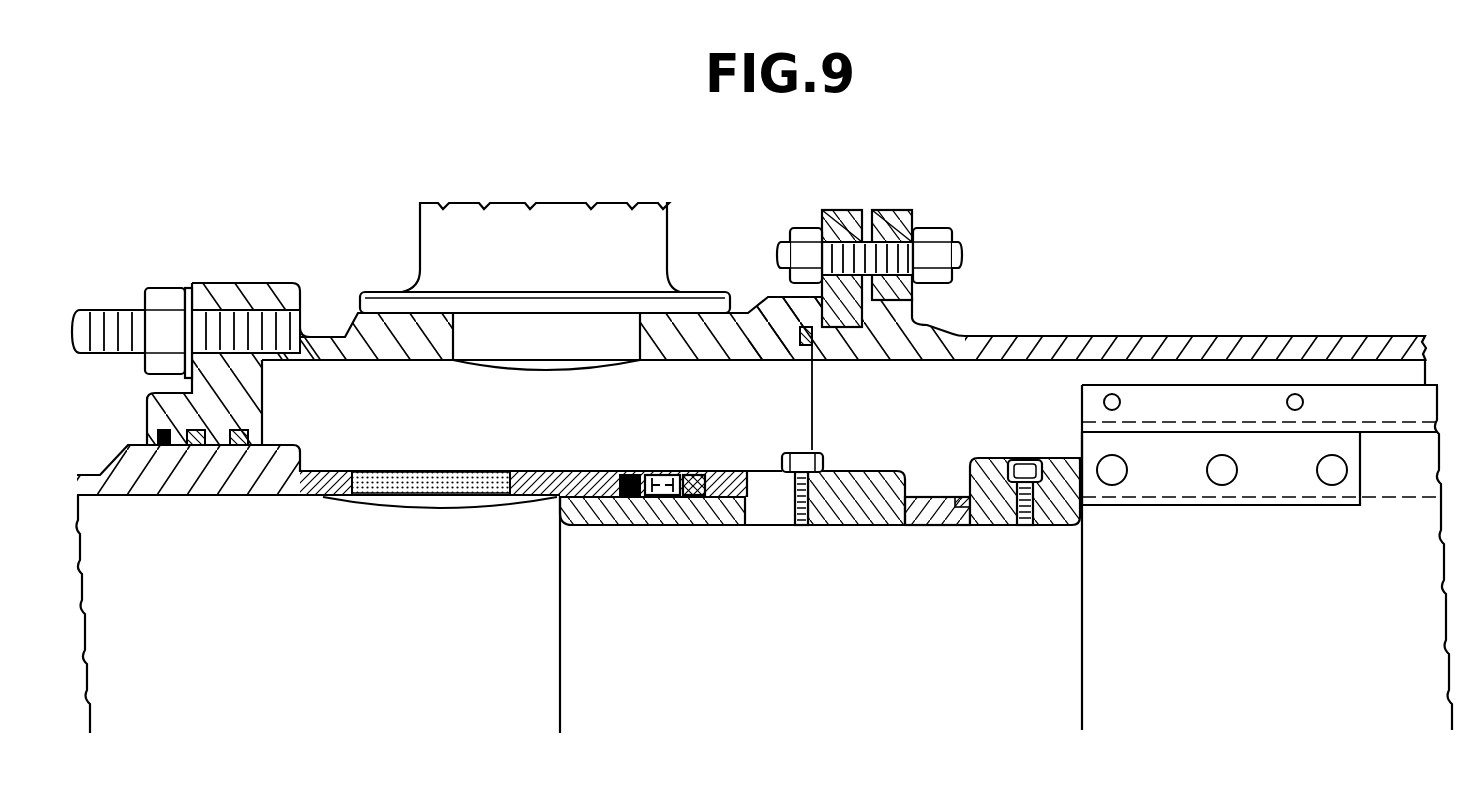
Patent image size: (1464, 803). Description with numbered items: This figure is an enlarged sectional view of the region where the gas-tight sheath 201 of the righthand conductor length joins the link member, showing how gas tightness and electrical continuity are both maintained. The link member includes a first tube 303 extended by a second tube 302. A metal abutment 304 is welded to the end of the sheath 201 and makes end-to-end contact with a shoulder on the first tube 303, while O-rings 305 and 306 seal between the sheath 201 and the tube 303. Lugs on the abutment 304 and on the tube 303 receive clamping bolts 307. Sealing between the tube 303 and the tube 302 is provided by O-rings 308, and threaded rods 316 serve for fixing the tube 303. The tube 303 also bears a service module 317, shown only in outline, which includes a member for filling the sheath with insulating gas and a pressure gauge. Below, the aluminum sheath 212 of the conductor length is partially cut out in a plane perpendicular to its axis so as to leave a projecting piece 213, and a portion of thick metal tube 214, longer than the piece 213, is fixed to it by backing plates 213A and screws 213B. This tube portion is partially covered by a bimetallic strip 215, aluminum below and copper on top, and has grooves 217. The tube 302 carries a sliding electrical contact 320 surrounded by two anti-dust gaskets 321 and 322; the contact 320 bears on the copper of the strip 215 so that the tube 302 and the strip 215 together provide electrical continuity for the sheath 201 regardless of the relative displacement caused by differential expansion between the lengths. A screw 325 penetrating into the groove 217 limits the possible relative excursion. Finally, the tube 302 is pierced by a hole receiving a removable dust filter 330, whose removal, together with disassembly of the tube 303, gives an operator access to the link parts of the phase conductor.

The gas-tight sheath 201 is at (1177, 343).
The aluminum sheath 212 is at (1353, 398).
The projecting piece 213 is at (975, 510).
The backing plates 213A is at (1013, 430).
The screws 213B is at (1040, 520).
The thick metal tube 214 is at (918, 510).
The bimetallic strip 215 is at (652, 500).
The grooves 217 is at (830, 500).
The second tube 302 is at (753, 480).
The first tube 303 is at (222, 300).
The metal abutment 304 is at (888, 285).
The O-ring 305 is at (828, 373).
The O-ring 306 is at (843, 349).
The clamping bolts 307 is at (880, 248).
The O-rings 308 is at (205, 430).
The threaded rods 316 is at (120, 310).
The service module 317 is at (640, 232).
The sliding electrical contact 320 is at (650, 478).
The anti-dust gasket 321 is at (612, 478).
The anti-dust gasket 322 is at (698, 478).
The screw 325 is at (815, 485).
The removable dust filter 330 is at (413, 480).